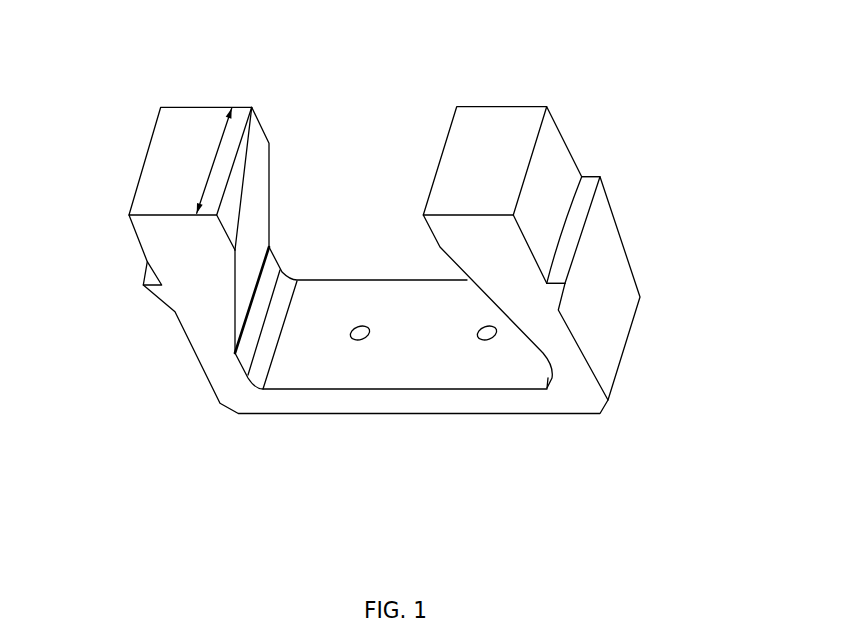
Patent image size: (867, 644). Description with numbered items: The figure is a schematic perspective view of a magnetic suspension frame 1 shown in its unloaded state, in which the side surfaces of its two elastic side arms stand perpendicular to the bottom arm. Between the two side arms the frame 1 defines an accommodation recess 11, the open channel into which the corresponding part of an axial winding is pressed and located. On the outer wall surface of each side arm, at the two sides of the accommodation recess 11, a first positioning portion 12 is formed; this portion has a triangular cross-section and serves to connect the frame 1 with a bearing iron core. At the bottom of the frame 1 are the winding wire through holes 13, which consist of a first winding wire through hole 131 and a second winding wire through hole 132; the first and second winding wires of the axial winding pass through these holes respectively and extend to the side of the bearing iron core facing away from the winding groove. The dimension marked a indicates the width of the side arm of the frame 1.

The frame 1 is at (170, 158).
The accommodation recess 11 is at (438, 57).
The first positioning portion 12 is at (685, 168).
The winding wire through holes 13 is at (423, 426).
The first winding wire through hole 131 is at (398, 445).
The second winding wire through hole 132 is at (433, 488).
The width dimension a is at (214, 160).